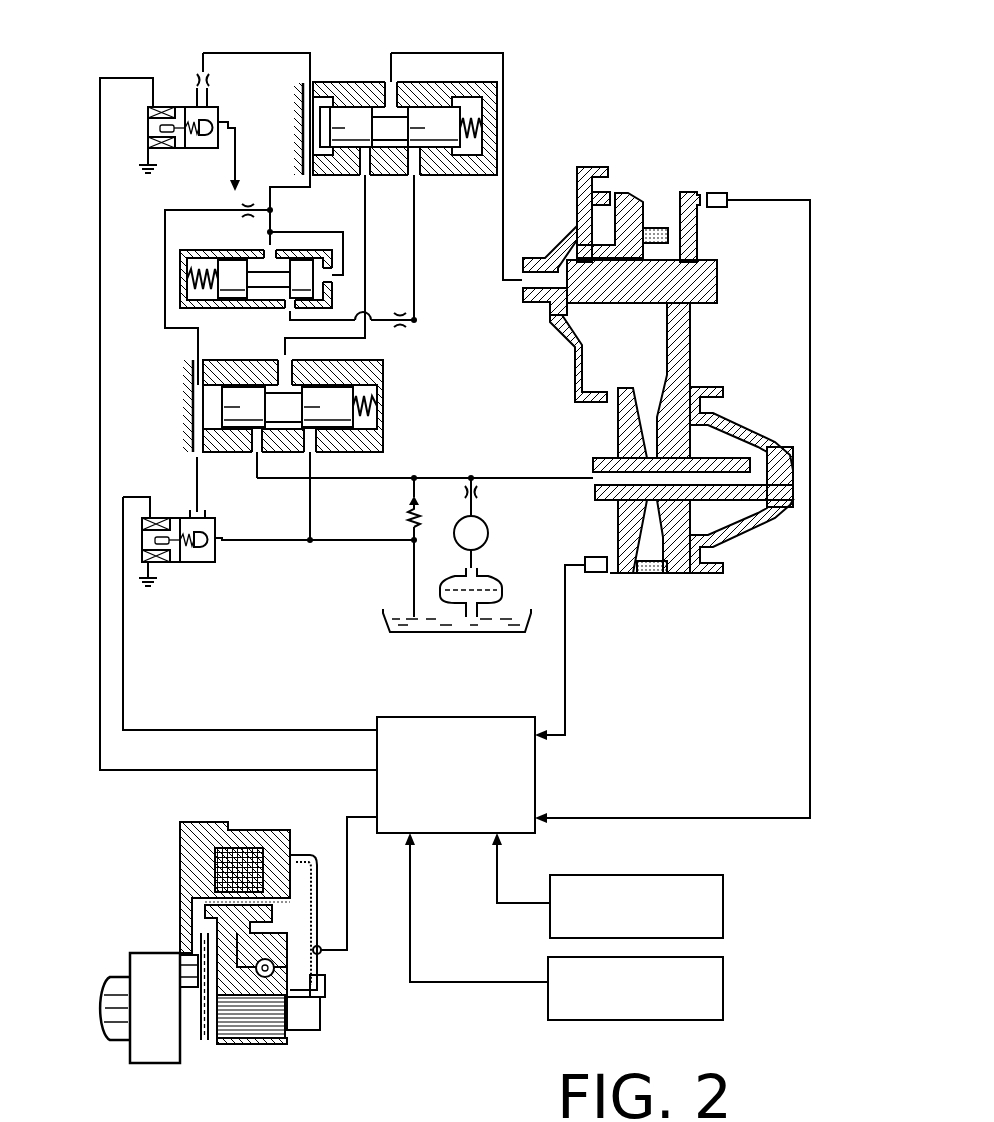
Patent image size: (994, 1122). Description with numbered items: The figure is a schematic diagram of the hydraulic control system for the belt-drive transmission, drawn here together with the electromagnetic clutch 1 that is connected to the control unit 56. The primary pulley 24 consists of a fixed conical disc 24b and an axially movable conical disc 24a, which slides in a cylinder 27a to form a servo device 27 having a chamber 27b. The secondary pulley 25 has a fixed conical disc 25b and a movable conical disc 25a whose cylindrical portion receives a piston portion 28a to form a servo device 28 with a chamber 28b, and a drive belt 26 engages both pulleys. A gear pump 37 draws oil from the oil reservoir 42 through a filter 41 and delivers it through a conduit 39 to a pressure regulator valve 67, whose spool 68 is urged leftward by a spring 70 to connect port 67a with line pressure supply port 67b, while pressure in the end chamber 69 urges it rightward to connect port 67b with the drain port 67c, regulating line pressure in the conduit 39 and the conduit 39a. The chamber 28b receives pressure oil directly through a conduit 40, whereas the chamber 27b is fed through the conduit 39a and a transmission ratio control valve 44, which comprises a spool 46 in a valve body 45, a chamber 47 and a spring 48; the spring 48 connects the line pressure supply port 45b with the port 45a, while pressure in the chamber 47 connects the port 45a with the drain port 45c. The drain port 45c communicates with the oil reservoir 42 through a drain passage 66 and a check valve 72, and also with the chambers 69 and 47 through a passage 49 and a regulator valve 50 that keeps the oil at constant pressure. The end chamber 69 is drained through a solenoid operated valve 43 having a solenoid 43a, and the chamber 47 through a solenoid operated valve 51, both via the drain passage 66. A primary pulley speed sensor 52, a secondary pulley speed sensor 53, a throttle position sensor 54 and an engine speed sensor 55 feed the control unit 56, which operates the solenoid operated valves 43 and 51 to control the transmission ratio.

The electromagnetic clutch 1 is at (258, 827).
The primary pulley 24 is at (662, 355).
The axially movable conical disc 24a is at (633, 208).
The fixed conical disc 24b is at (684, 334).
The secondary pulley 25 is at (640, 502).
The movable conical disc 25a is at (690, 575).
The fixed conical disc 25b is at (628, 525).
The drive belt 26 is at (657, 228).
The servo device 27 is at (563, 258).
The cylinder 27a is at (590, 167).
The chamber 27b is at (573, 248).
The servo device 28 is at (743, 475).
The piston portion 28a is at (740, 530).
The chamber 28b is at (777, 423).
The gear pump 37 is at (489, 540).
The conduit 39 is at (338, 478).
The conduit 39a is at (364, 284).
The conduit 40 is at (530, 477).
The filter 41 is at (497, 600).
The oil reservoir 42 is at (507, 637).
The solenoid operated valve 43 is at (270, 593).
The solenoid 43a is at (163, 518).
The transmission ratio control valve 44 is at (403, 195).
The valve body 45 is at (347, 97).
The port 45a is at (397, 92).
The line pressure supply port 45b is at (360, 175).
The drain port 45c is at (420, 173).
The spool 46 is at (352, 117).
The chamber 47 is at (308, 128).
The spring 48 is at (483, 148).
The passage 49 is at (285, 188).
The regulator valve 50 is at (228, 302).
The solenoid operated valve 51 is at (148, 143).
The primary pulley speed sensor 52 is at (727, 192).
The secondary pulley speed sensor 53 is at (597, 572).
The throttle position sensor 54 is at (724, 885).
The engine speed sensor 55 is at (724, 968).
The control unit 56 is at (446, 717).
The drain passage 66 is at (235, 168).
The pressure regulator valve 67 is at (325, 437).
The port 67a is at (255, 448).
The line pressure supply port 67b is at (275, 372).
The drain port 67c is at (308, 450).
The spool 68 is at (337, 440).
The end chamber 69 is at (202, 403).
The spring 70 is at (380, 420).
The check valve 72 is at (406, 508).